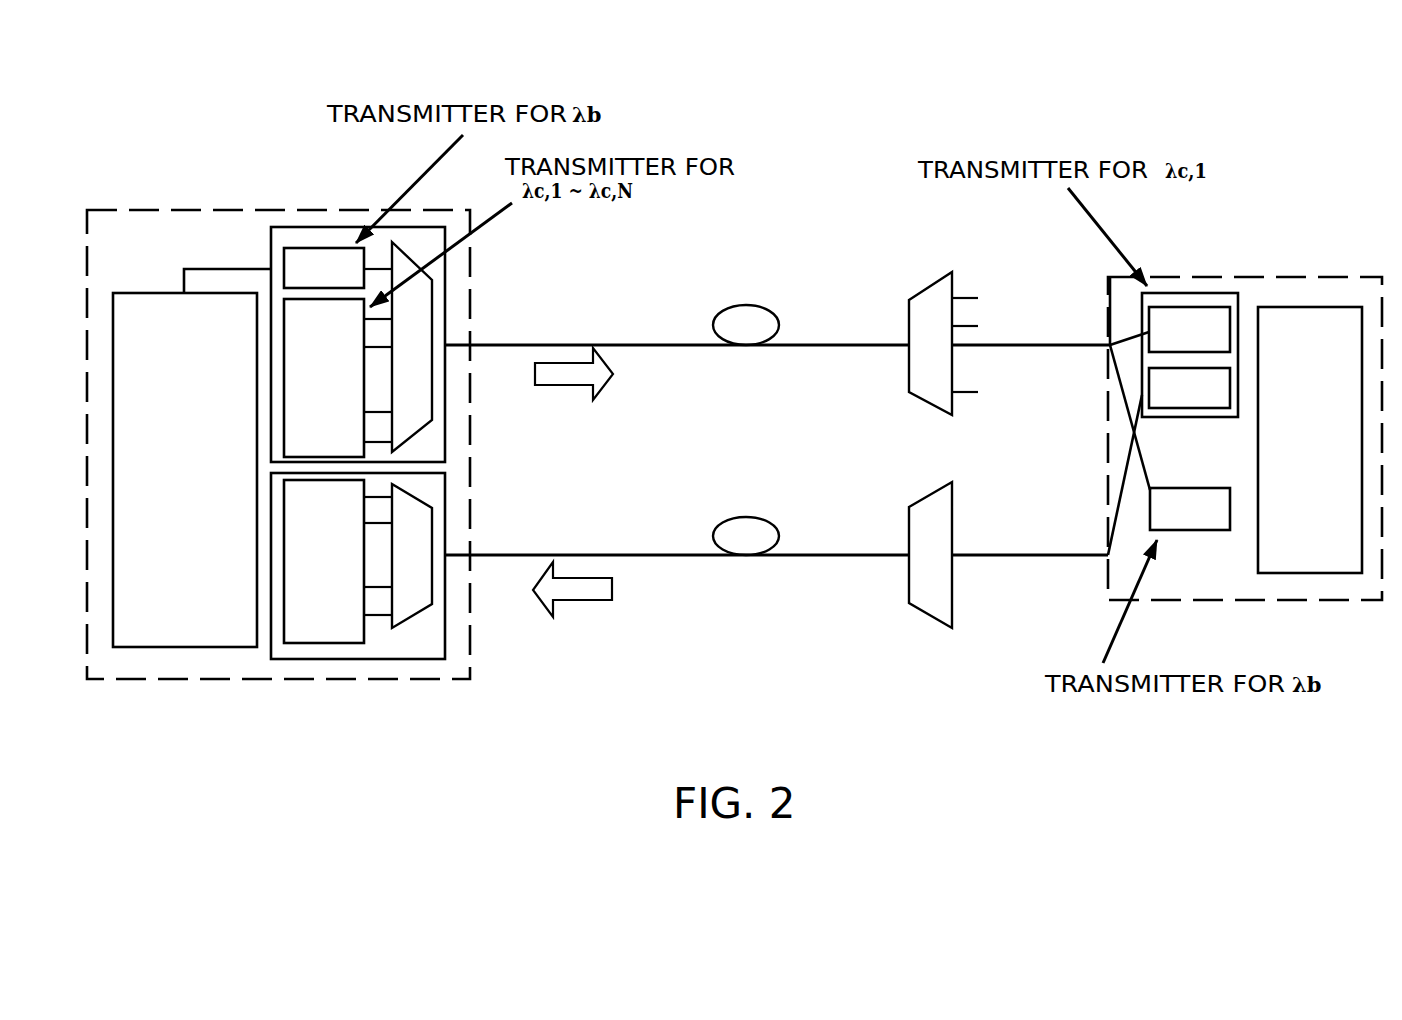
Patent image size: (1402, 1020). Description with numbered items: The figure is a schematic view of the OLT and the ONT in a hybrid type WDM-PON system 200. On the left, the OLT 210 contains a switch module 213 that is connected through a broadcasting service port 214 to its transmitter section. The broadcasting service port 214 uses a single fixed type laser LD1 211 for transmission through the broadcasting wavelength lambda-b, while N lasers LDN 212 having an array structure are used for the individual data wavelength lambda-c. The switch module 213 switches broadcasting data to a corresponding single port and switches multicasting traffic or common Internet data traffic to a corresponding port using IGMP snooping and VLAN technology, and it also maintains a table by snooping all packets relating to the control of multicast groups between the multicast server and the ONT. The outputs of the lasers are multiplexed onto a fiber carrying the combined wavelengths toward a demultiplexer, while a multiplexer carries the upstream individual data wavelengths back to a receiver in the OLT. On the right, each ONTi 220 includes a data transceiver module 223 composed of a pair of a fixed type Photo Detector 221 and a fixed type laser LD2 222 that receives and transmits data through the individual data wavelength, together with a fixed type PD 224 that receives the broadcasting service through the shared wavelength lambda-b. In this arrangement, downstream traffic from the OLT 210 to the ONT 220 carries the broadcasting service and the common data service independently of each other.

The hybrid type WDM-PON system 200 is at (788, 196).
The OLT 210 is at (207, 210).
The fixed type laser LD1 211 is at (311, 248).
The lasers LDN 212 is at (366, 381).
The switch module 213 is at (152, 647).
The broadcasting service port 214 is at (200, 268).
The ONTi 220 is at (1305, 277).
The fixed type Photo Detector (PD) 221 is at (1176, 307).
The fixed type laser LD2 222 is at (1190, 408).
The data transceiver module 223 is at (1142, 310).
The fixed type PD 224 is at (1180, 530).